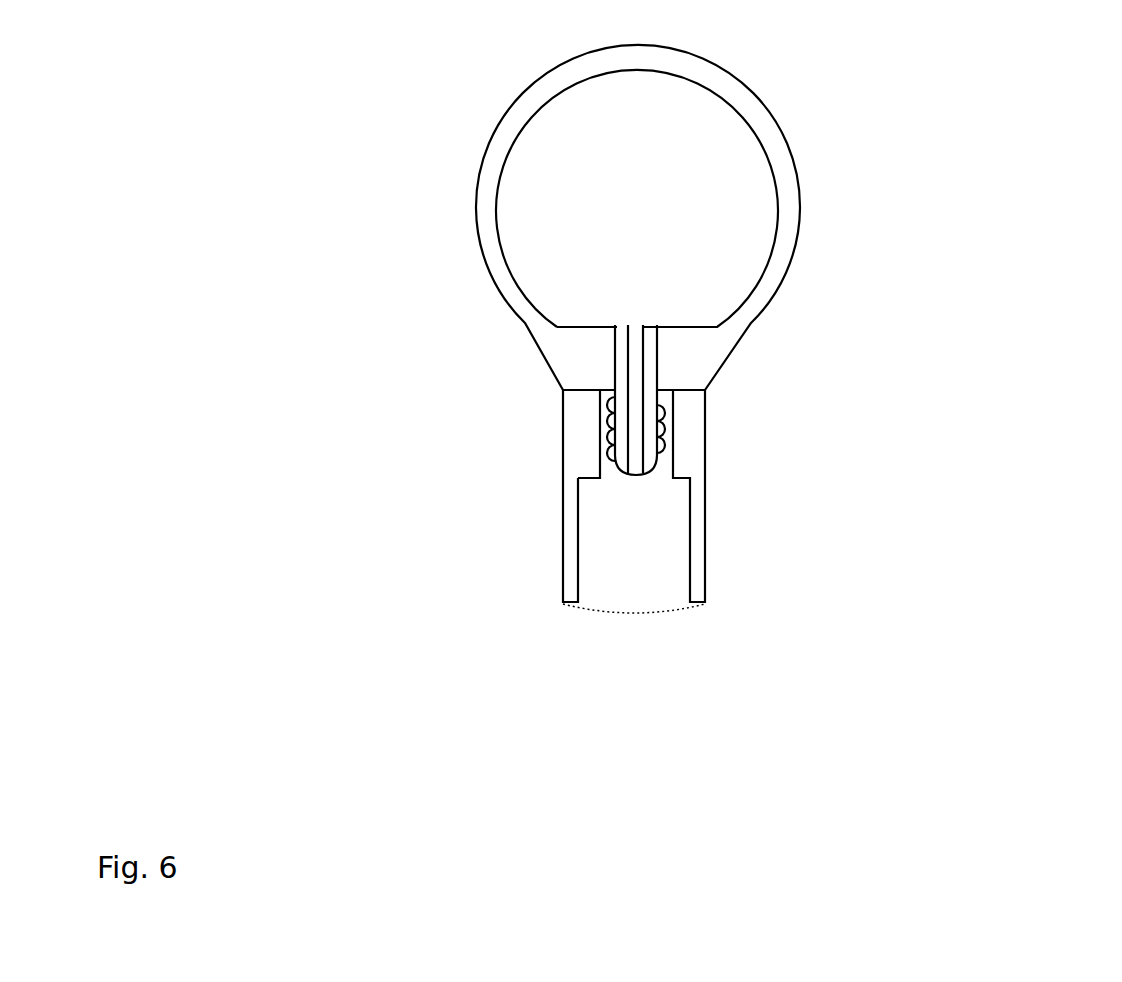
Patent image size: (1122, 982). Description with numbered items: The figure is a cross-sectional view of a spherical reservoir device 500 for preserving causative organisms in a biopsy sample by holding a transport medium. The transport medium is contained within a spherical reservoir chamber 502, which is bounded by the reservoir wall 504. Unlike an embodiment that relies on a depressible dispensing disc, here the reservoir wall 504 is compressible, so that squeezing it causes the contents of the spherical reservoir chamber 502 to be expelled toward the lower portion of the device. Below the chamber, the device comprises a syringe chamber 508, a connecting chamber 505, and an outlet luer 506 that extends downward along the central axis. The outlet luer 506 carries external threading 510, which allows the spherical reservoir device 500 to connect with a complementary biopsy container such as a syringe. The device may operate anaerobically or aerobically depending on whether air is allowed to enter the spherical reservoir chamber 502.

The spherical reservoir device 500 is at (402, 556).
The spherical reservoir chamber 502 is at (660, 140).
The reservoir wall 504 is at (780, 233).
The connecting chamber 505 is at (600, 435).
The outlet luer 506 is at (650, 443).
The syringe chamber 508 is at (648, 557).
The external threading 510 is at (610, 470).